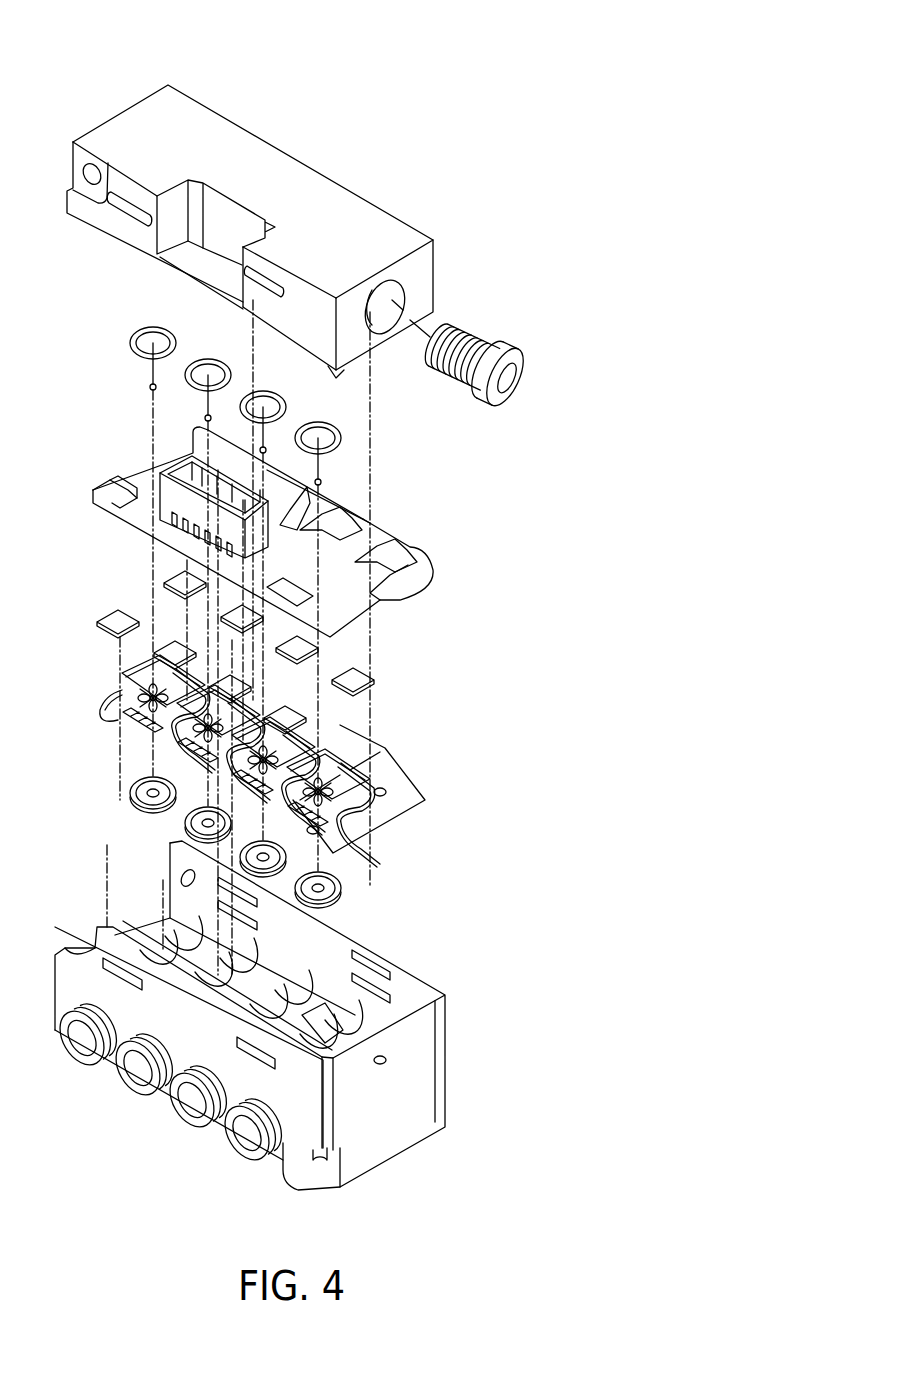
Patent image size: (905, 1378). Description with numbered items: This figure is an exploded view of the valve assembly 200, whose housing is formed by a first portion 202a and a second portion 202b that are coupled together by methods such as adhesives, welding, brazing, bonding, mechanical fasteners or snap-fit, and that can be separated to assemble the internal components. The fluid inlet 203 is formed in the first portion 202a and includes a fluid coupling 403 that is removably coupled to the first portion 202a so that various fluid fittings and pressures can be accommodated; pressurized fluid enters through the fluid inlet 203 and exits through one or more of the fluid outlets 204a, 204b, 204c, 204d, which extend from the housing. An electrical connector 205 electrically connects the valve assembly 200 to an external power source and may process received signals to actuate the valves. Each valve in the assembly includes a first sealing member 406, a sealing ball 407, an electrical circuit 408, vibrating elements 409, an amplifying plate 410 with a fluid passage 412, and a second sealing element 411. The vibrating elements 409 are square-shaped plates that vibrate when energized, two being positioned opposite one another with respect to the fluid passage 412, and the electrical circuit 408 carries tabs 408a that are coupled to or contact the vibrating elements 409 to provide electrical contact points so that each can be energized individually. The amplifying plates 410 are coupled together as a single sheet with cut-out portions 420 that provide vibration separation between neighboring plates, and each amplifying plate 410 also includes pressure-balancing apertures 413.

The valve assembly 200 is at (555, 88).
The first portion 202a is at (393, 225).
The second portion 202b is at (447, 1075).
The fluid inlet 203 is at (408, 283).
The fluid outlet 204a is at (247, 1158).
The fluid outlet 204b is at (193, 1123).
The fluid outlet 204c is at (140, 1093).
The fluid outlet 204d is at (82, 1060).
The electrical connector 205 is at (158, 467).
The fluid coupling 403 is at (523, 362).
The first sealing member 406 is at (130, 338).
The sealing ball 407 is at (150, 387).
The electrical circuit 408 is at (112, 487).
The tab 408a is at (305, 532).
The vibrating element 409 is at (110, 617).
The amplifying plate 410 is at (112, 722).
The second sealing element 411 is at (130, 793).
The fluid passage 412 is at (122, 680).
The pressure-balancing aperture 413 is at (355, 778).
The cut-out portion 420 is at (118, 690).